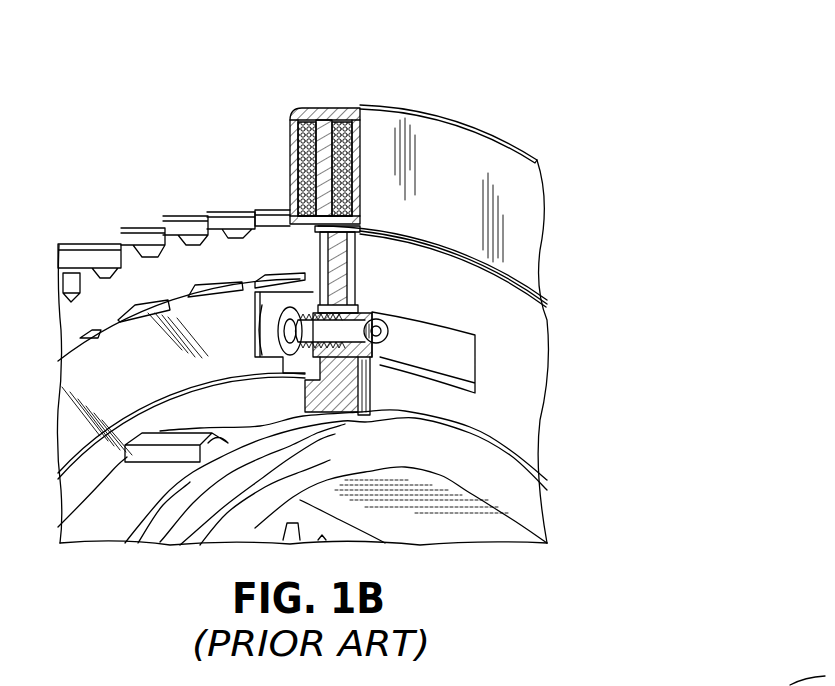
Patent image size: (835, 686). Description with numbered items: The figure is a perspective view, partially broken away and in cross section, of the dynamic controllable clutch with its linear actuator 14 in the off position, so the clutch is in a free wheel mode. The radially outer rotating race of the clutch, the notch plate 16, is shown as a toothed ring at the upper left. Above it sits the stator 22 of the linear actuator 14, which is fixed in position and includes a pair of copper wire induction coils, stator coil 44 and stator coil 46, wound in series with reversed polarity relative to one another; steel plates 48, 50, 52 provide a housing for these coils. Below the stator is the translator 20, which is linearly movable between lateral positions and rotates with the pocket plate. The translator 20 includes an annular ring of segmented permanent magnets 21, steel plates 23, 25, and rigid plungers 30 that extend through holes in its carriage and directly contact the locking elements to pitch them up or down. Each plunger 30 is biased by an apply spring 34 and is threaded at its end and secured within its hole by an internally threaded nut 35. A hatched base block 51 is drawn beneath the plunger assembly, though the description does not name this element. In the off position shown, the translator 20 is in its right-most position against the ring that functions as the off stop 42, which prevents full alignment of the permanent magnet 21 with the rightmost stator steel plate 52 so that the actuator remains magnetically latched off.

The linear actuator 14 is at (475, 63).
The notch plate 16 is at (147, 214).
The translator 20 is at (517, 273).
The permanent magnets 21 is at (320, 270).
The stator 22 is at (512, 143).
The steel plate 23 is at (345, 276).
The steel plate 25 is at (357, 266).
The plunger 30 is at (358, 311).
The apply spring 34 is at (257, 330).
The nut 35 is at (386, 333).
The off stop 42 is at (480, 403).
The stator coil 44 is at (302, 135).
The stator coil 46 is at (336, 197).
The steel plate 48 is at (320, 170).
The steel plate 50 is at (305, 112).
The base block 51 is at (338, 383).
The steel plate 52 is at (357, 157).